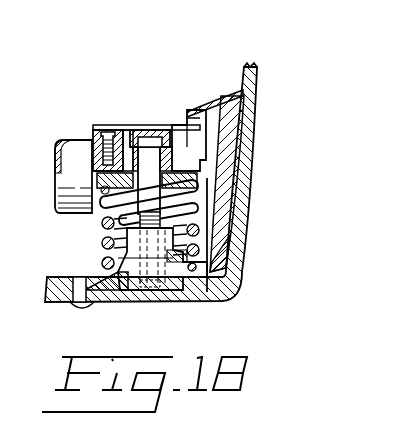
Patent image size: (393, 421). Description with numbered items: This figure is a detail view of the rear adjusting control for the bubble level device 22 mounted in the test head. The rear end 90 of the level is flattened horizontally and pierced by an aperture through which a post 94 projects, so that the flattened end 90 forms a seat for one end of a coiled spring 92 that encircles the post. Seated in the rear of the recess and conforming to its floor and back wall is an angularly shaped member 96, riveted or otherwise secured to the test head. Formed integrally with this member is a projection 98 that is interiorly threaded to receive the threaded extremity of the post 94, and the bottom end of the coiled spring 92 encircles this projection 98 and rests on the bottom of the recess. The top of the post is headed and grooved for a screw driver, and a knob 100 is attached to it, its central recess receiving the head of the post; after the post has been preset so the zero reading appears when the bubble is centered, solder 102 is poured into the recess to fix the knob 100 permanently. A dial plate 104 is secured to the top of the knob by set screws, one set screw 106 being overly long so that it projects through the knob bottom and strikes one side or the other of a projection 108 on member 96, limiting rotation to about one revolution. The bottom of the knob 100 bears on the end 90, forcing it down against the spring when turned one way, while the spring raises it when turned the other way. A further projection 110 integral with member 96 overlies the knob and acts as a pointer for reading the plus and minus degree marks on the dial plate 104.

The bubble level device 22 is at (72, 207).
The rear end of the level indicating device 90 is at (198, 180).
The coiled spring 92 is at (199, 230).
The post 94 is at (182, 157).
The angularly shaped member 96 is at (218, 252).
The projection 98 is at (174, 254).
The knob 100 is at (178, 120).
The solder 102 is at (130, 132).
The dial plate 104 is at (162, 122).
The set screw 106 is at (88, 145).
The projection 108 is at (148, 172).
The projection 110 is at (200, 104).